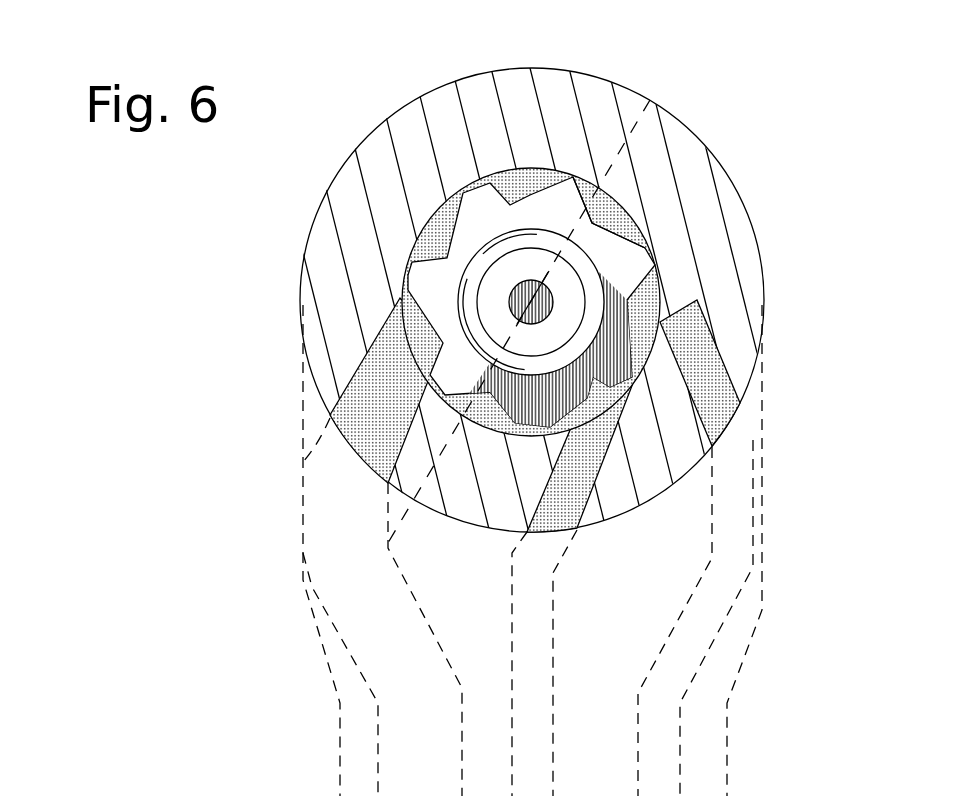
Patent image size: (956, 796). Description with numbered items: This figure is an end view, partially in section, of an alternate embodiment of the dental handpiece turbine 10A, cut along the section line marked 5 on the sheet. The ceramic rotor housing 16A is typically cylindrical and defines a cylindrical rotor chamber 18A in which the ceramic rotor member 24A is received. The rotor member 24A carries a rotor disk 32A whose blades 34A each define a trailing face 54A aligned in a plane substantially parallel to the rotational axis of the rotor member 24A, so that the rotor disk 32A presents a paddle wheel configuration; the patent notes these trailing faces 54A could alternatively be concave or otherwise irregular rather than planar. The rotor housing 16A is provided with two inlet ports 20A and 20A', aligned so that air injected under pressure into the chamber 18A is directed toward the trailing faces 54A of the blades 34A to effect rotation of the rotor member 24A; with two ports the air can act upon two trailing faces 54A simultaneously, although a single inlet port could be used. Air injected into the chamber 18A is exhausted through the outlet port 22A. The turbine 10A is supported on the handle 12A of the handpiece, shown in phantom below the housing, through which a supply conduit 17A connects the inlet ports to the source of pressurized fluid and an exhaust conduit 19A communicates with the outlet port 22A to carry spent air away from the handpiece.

The turbine 10A is at (198, 408).
The handle 12A is at (313, 635).
The rotor housing 16A is at (307, 242).
The supply conduit 17A is at (638, 753).
The rotor chamber 18A is at (522, 190).
The exhaust conduit 19A is at (377, 707).
The inlet port 20A is at (586, 481).
The inlet port 20A' is at (759, 374).
The outlet port 22A is at (372, 440).
The rotor member 24A is at (495, 318).
The rotor disk 32A is at (428, 252).
The blades 34A is at (398, 272).
The trailing face 54A is at (590, 222).
The section line 5- 5 is at (650, 100).